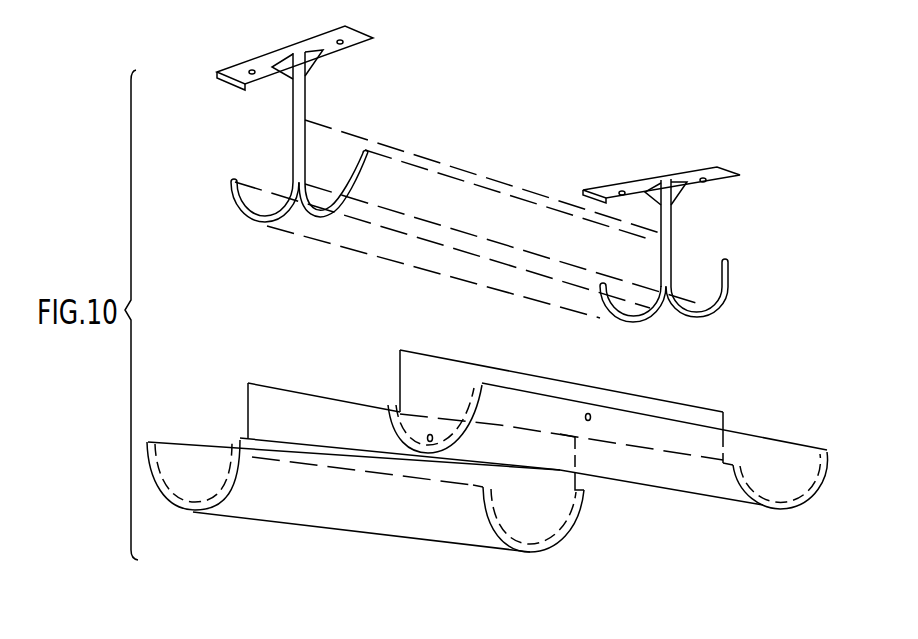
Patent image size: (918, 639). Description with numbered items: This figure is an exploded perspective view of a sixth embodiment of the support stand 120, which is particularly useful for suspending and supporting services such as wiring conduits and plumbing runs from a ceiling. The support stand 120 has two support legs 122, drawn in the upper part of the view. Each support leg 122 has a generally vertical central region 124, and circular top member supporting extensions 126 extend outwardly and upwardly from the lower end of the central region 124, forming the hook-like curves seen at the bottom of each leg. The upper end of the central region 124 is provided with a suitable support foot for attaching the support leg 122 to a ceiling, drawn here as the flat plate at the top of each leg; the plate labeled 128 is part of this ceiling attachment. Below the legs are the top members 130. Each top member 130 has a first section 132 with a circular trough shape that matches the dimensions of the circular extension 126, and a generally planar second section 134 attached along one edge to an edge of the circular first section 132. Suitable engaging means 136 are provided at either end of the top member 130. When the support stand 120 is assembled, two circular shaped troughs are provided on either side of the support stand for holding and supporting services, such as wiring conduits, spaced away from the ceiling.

The support stand 120 is at (524, 176).
The support leg 122 is at (673, 237).
The central region 124 is at (306, 129).
The circular top member supporting extension 126 is at (233, 207).
The mounting plate 128 is at (347, 25).
The top member 130 is at (483, 464).
The first section 132 is at (253, 502).
The second section 134 is at (299, 404).
The engaging means 136 is at (148, 444).